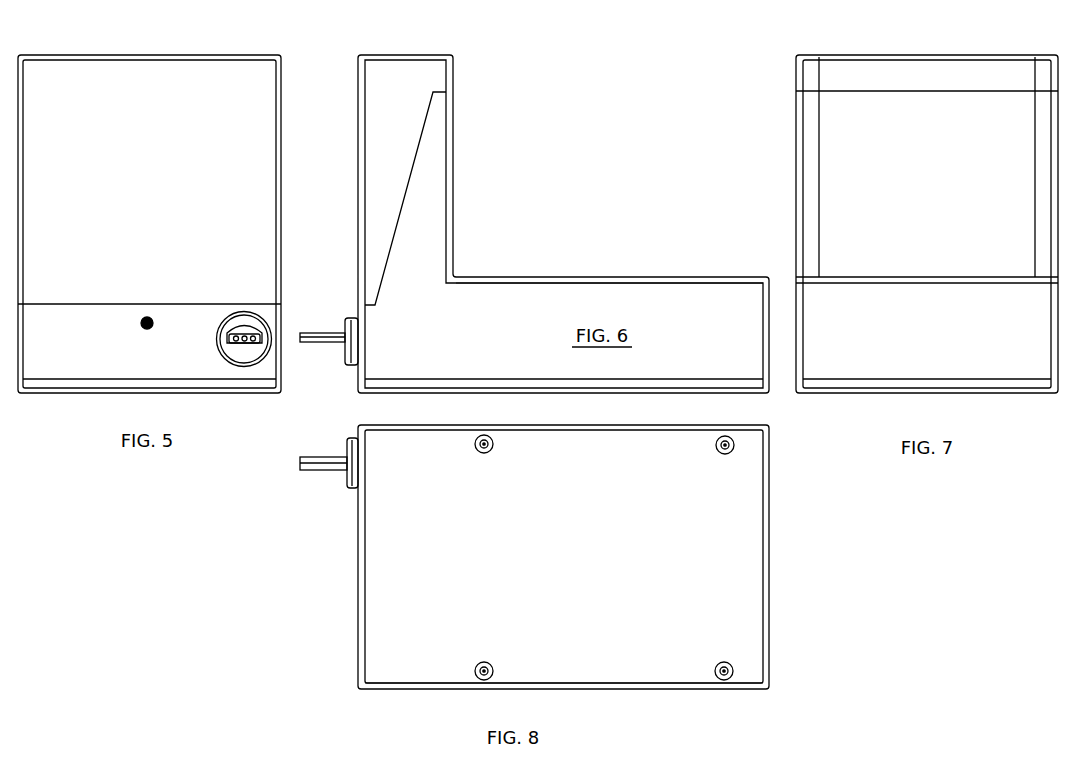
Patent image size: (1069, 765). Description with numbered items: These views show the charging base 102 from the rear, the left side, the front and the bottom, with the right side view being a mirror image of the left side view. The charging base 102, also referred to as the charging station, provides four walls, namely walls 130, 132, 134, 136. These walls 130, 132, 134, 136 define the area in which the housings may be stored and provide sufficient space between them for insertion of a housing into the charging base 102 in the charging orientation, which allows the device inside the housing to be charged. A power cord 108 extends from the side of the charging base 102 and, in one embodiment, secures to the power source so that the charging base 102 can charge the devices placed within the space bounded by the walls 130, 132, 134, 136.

In FIG. 6, the charging base 102 is at (693, 299).
In FIG. 5, the power cord 108 is at (246, 356).
In FIG. 6, the power cord 108 is at (329, 341).
In FIG. 8, the power cord 108 is at (350, 475).
In FIG. 6, the wall 130 is at (518, 322).
In FIG. 8, the wall 130 is at (745, 433).
In FIG. 8, the wall 132 is at (713, 690).
In FIG. 7, the wall 134 is at (859, 340).
In FIG. 5, the wall 136 is at (205, 133).
In FIG. 6, the wall 136 is at (405, 135).
In FIG. 7, the wall 136 is at (865, 182).